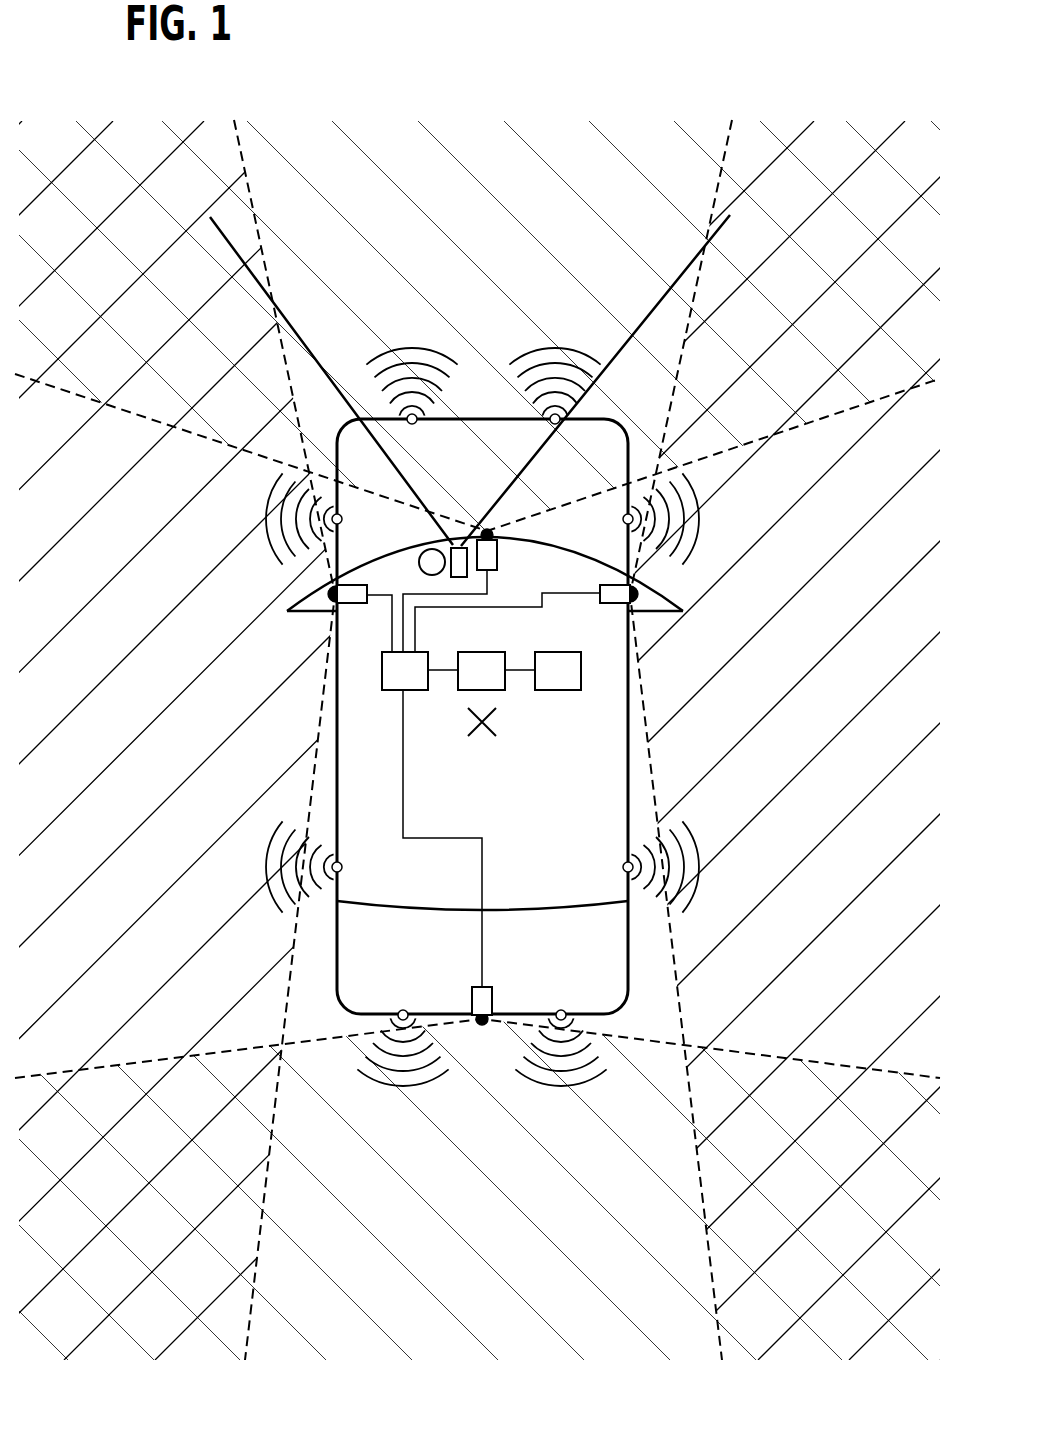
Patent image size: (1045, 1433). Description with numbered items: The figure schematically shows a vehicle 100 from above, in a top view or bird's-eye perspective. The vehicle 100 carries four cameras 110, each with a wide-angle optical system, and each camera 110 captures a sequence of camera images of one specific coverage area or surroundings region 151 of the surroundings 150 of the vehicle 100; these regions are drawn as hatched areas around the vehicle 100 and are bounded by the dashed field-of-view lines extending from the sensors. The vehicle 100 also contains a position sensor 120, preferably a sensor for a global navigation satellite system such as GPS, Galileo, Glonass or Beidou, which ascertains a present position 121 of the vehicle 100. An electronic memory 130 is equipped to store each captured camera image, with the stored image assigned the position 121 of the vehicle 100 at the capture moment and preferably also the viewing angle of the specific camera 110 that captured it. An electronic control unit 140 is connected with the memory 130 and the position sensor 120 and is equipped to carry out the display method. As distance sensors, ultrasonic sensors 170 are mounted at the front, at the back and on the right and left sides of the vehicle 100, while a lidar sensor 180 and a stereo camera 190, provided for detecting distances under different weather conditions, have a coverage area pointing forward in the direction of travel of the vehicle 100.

The vehicle 100 is at (480, 418).
The camera 110 is at (497, 557).
The position sensor 120 is at (552, 690).
The present position 121 is at (482, 722).
The electronic memory 130 is at (415, 690).
The electronic control unit 140 is at (493, 690).
The surroundings 150 is at (71, 197).
The surroundings region 151 is at (460, 236).
The ultrasonic sensor 170 is at (416, 423).
The lidar sensor 180 is at (432, 575).
The stereo camera 190 is at (459, 572).